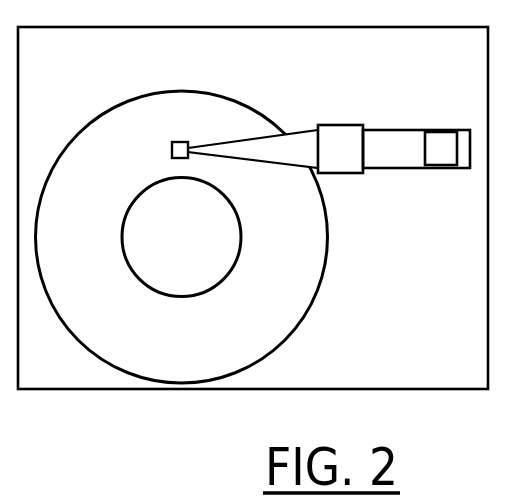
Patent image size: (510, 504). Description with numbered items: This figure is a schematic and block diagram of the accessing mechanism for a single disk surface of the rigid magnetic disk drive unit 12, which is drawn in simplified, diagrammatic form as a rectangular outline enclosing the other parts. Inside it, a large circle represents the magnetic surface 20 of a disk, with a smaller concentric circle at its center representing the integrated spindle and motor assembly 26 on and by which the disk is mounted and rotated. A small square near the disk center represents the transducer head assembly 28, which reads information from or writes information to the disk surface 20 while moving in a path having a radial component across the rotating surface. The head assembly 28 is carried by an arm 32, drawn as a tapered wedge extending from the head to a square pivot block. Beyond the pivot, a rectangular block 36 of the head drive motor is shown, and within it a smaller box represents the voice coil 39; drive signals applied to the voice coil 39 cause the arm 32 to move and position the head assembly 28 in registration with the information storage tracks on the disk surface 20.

The rigid magnetic disk drive unit 12 is at (449, 323).
The magnetic surface 20 is at (170, 340).
The integrated spindle and motor assembly 26 is at (181, 237).
The transducer head assembly 28 is at (168, 150).
The arm 32 is at (275, 149).
The actuator 36 is at (416, 149).
The voice coil 39 is at (441, 148).